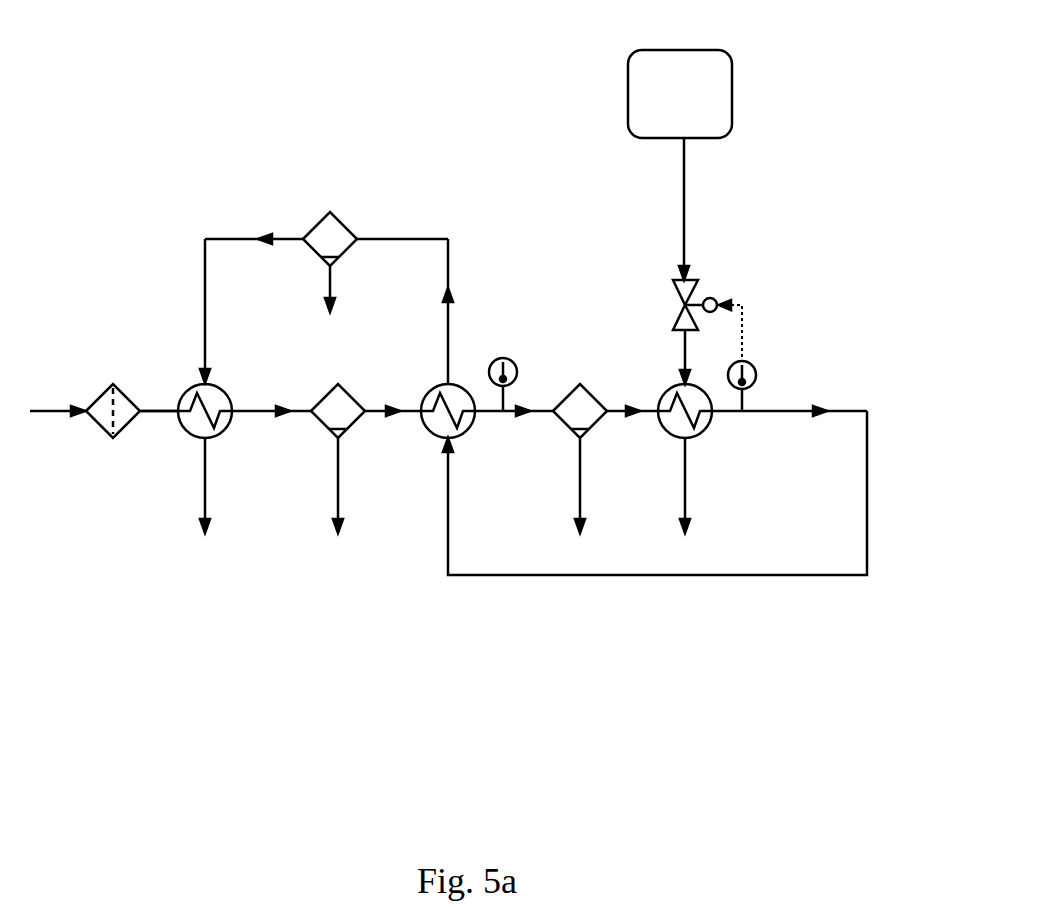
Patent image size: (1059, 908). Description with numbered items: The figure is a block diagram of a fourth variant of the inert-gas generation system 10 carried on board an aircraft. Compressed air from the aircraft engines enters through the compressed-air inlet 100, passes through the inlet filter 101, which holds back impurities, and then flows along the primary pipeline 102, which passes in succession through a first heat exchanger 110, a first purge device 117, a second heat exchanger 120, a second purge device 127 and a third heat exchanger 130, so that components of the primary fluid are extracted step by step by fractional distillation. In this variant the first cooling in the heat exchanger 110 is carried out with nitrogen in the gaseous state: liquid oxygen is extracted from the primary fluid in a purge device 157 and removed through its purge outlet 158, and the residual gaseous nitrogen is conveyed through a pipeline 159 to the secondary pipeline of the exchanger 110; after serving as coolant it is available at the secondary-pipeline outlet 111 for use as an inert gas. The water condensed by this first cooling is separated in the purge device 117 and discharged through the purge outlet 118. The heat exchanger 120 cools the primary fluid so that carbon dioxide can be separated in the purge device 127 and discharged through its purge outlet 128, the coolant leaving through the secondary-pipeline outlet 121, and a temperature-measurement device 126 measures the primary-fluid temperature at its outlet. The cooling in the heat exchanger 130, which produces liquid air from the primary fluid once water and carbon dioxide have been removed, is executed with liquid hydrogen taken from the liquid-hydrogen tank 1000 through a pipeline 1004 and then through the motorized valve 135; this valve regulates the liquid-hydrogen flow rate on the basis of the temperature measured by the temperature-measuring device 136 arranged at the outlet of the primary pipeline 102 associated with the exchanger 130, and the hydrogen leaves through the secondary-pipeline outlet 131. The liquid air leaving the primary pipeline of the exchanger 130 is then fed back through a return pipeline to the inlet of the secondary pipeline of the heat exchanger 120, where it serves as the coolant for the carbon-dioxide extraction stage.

The inert-gas generation system 10 is at (467, 47).
The compressed-air inlet 100 is at (62, 405).
The inlet filter 101 is at (100, 430).
The pipeline 102 is at (150, 407).
The first heat exchanger 110 is at (208, 430).
The secondary-pipeline outlet 111 is at (204, 473).
The first purge device 117 is at (325, 425).
The purge outlet 118 is at (337, 490).
The second heat exchanger 120 is at (425, 432).
The secondary-pipeline outlet 121 is at (447, 330).
The temperature-measurement device 126 is at (518, 368).
The second purge device 127 is at (568, 425).
The purge outlet 128 is at (578, 490).
The third heat exchanger 130 is at (690, 438).
The secondary-pipeline outlet 131 is at (686, 490).
The motorized valve 135 is at (695, 290).
The temperature-measuring device 136 is at (757, 370).
The purge device 157 is at (338, 222).
The purge outlet 158 is at (327, 282).
The pipeline 159 is at (222, 240).
The liquid-hydrogen tank 1000 is at (725, 100).
The pipeline 1004 is at (684, 200).